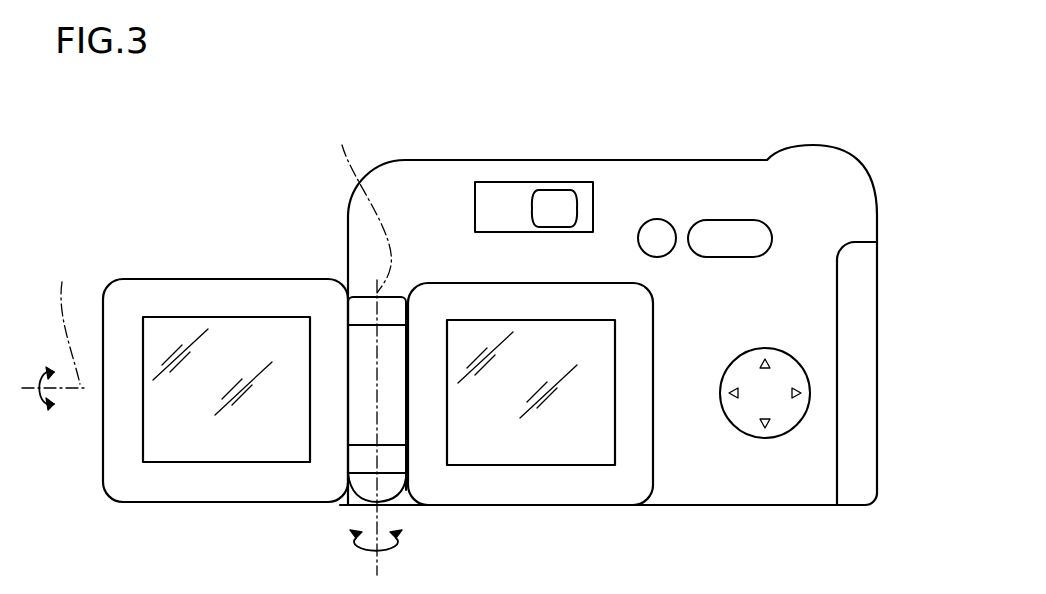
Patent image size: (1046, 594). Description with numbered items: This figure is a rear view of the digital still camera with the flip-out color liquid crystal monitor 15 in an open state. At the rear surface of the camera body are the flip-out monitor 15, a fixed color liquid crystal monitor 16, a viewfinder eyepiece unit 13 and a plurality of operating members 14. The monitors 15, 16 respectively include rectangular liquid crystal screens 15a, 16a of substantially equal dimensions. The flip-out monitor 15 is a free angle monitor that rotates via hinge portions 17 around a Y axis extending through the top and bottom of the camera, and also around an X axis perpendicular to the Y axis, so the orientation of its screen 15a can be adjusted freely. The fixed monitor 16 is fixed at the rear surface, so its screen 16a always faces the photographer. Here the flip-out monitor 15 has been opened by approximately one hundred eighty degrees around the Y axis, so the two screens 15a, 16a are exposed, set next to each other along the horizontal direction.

The viewfinder eyepiece unit 13 is at (558, 200).
The operating members 14 is at (727, 232).
The flip-out color liquid crystal monitor 15 is at (212, 292).
The liquid crystal screen 15a is at (237, 450).
The fixed color liquid crystal monitor 16 is at (592, 480).
The liquid crystal screen 16a is at (473, 452).
The hinge portions 17 is at (365, 308).